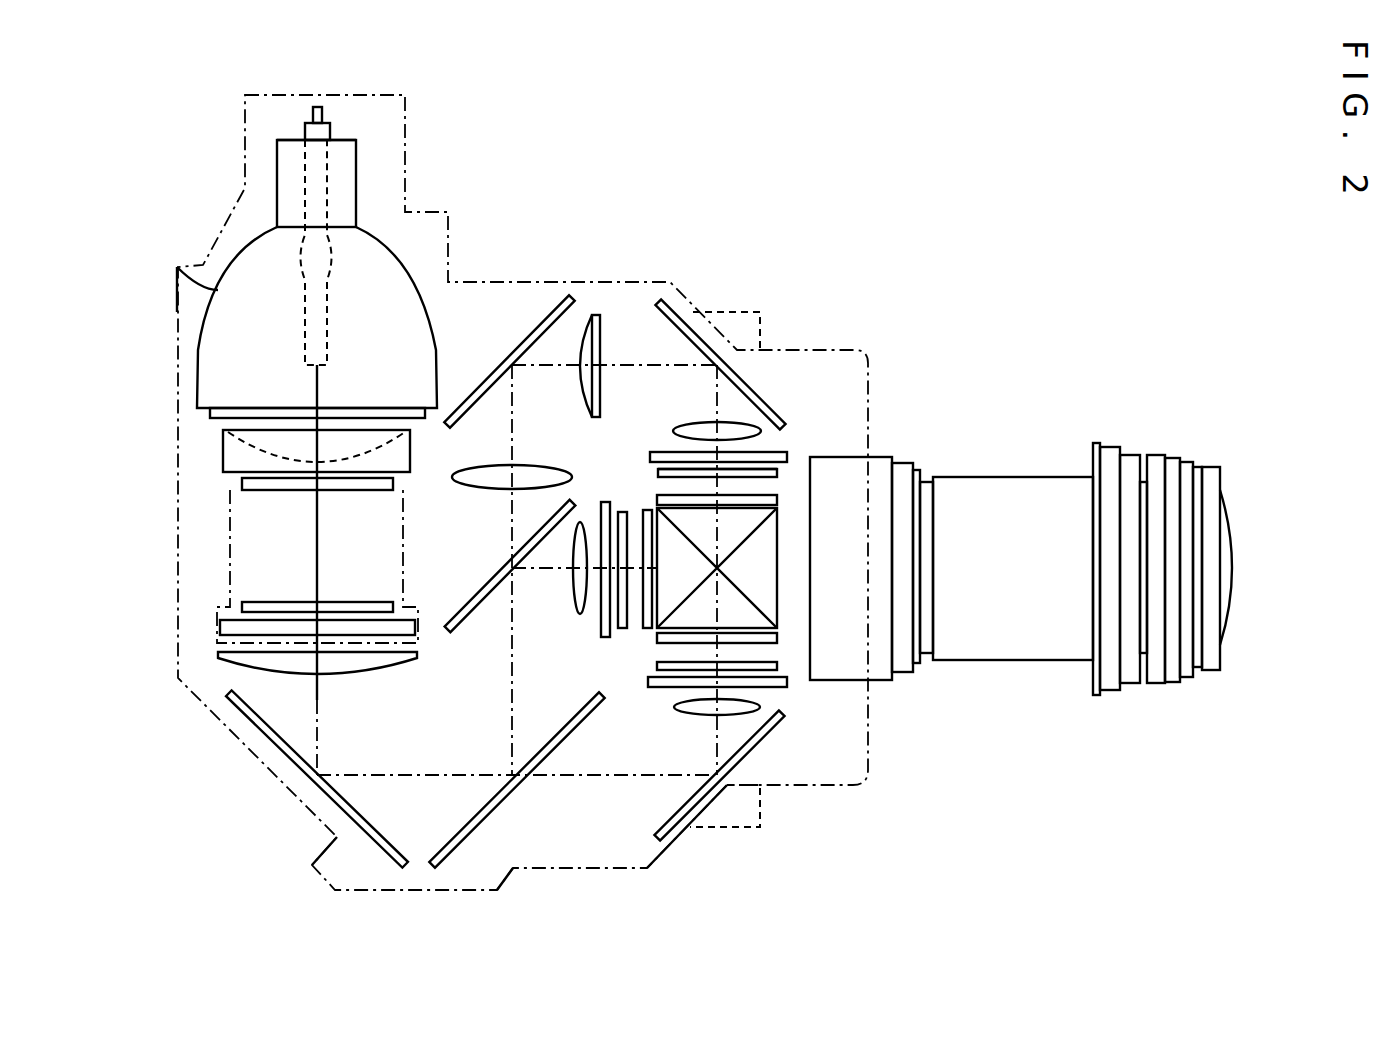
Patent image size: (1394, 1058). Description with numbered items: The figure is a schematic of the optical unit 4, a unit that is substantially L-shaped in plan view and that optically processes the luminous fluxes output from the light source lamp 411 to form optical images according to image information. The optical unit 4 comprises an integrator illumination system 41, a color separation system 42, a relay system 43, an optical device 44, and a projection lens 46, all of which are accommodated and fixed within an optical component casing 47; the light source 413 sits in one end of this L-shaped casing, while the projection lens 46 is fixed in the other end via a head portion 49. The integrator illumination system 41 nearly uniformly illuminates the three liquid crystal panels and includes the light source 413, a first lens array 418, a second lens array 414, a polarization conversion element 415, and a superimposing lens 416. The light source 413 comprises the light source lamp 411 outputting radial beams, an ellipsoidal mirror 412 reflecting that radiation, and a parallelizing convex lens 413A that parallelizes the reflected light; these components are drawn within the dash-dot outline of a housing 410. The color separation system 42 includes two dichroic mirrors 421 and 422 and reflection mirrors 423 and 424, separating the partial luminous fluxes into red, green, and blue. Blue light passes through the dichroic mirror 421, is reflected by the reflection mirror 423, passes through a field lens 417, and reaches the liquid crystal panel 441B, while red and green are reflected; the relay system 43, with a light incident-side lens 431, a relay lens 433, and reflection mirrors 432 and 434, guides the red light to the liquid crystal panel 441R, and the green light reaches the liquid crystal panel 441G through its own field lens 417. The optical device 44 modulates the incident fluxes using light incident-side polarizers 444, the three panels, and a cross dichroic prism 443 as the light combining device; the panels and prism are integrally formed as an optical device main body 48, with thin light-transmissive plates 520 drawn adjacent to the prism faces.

The optical unit 4 is at (732, 203).
The integrator illumination system 41 is at (120, 415).
The light source housing 410 is at (230, 550).
The light source lamp 411 is at (298, 256).
The ellipsoidal mirror 412 is at (177, 267).
The light source 413 is at (67, 172).
The parallelizing convex lens 413A is at (232, 450).
The second lens array 414 is at (250, 602).
The polarization conversion element 415 is at (222, 627).
The superimposing lens 416 is at (220, 655).
The field lens 417 is at (698, 425).
The first lens array 418 is at (242, 480).
The color separation system 42 is at (572, 790).
The dichroic mirror 421 is at (485, 817).
The dichroic mirror 422 is at (472, 613).
The reflection mirror 423 is at (700, 803).
The reflection mirror 424 is at (258, 735).
The relay system 43 is at (550, 253).
The light incident-side lens 431 is at (473, 483).
The reflection mirror 432 is at (525, 337).
The relay lens 433 is at (595, 315).
The reflection mirror 434 is at (693, 330).
The optical device 44 is at (792, 605).
The liquid crystal panel for red 441R is at (787, 472).
The liquid crystal panel for green 441G is at (622, 512).
The liquid crystal panel for blue 441B is at (777, 667).
The cross dichroic prism 443 is at (768, 570).
The light incident-side polarizer 444 is at (650, 456).
The projection lens 46 is at (1035, 477).
The optical component casing 47 is at (507, 877).
The optical device main body 48 is at (768, 552).
The head portion 49 is at (876, 460).
The light-transmissive plate 520 is at (777, 500).